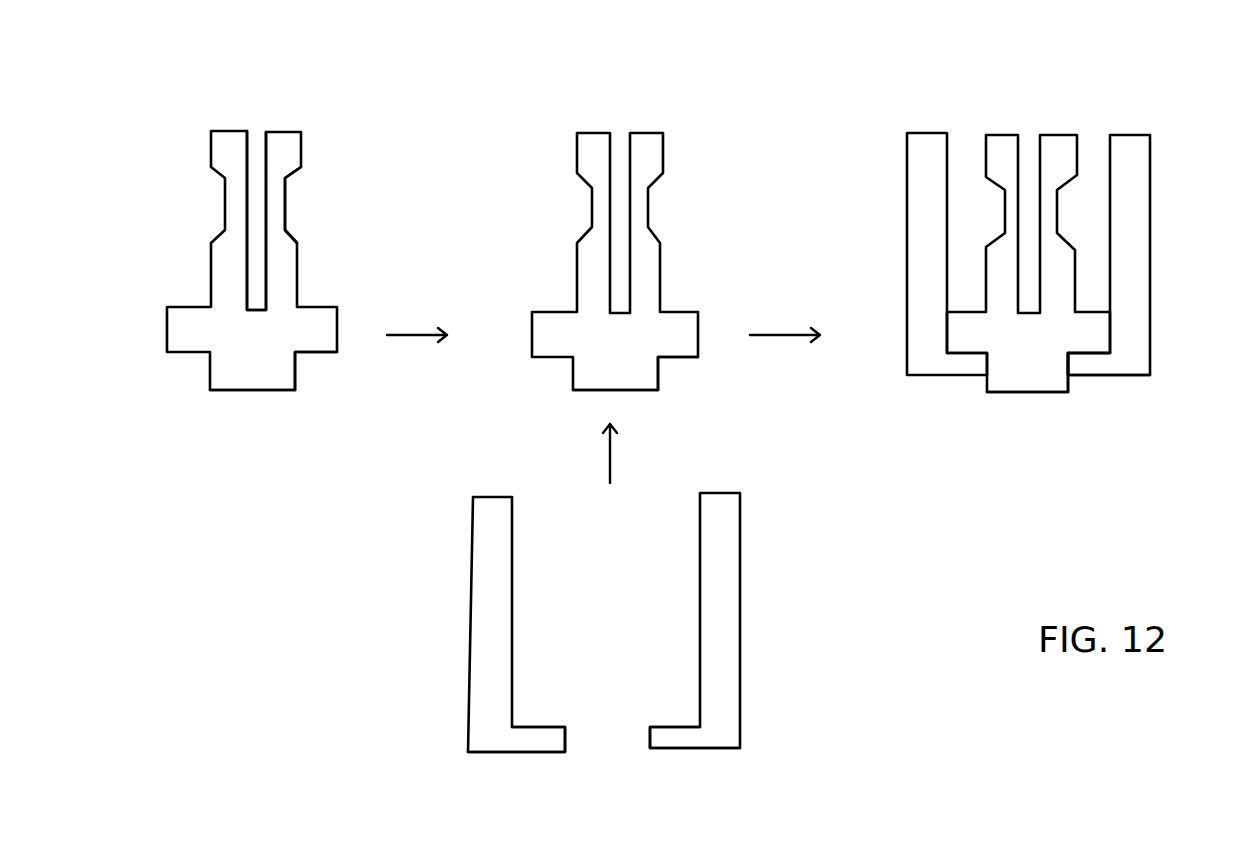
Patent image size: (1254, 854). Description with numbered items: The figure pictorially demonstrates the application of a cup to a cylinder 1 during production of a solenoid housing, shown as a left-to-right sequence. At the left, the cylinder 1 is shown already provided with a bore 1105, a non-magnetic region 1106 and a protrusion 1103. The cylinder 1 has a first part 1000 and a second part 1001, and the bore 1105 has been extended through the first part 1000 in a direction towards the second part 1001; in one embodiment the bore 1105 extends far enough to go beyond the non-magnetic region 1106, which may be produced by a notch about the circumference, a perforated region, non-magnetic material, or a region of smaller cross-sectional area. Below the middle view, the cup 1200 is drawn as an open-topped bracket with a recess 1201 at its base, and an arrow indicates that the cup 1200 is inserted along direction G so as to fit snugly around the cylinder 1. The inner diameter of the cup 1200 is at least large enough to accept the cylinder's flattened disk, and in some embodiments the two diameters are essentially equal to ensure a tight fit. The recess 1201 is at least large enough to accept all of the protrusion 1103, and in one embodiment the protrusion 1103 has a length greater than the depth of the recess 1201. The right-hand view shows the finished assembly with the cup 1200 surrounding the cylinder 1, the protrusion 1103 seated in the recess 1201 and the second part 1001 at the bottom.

The cylinder 1 is at (155, 103).
The first part 1000 is at (285, 132).
The second part 1001 is at (227, 390).
The protrusion 1103 is at (295, 375).
The bore 1105 is at (257, 130).
The non-magnetic region 1106 is at (283, 187).
The cup 1200 is at (475, 593).
The recess 1201 is at (592, 745).
The direction G is at (625, 455).